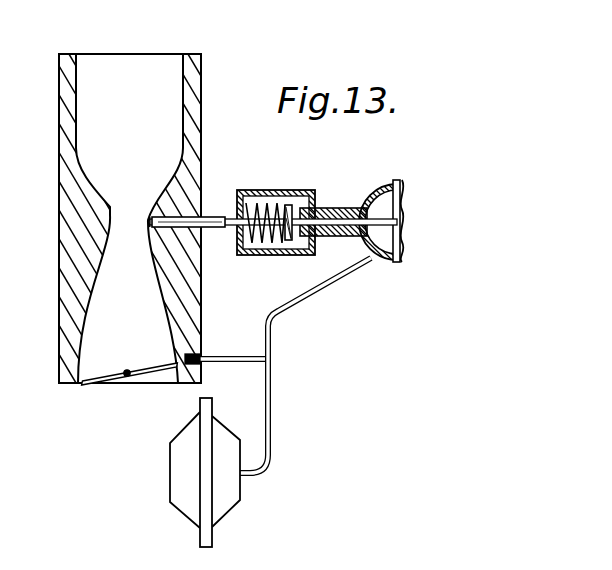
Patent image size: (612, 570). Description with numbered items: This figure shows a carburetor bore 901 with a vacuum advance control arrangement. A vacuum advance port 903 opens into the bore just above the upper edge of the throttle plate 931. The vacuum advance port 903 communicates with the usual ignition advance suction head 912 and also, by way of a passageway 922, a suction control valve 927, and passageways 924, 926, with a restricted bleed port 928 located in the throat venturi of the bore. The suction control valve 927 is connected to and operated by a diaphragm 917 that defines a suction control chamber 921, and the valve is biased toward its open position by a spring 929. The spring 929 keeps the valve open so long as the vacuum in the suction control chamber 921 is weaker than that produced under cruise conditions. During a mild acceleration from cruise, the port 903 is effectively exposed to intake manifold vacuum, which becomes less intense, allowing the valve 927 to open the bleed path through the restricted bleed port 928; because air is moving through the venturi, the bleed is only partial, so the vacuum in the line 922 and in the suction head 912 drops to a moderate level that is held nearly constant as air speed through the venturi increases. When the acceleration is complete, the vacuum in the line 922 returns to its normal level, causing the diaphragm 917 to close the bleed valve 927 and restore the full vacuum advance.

The carburetor bore 901 is at (203, 139).
The vacuum advance port 903 is at (207, 355).
The ignition advance suction head 912 is at (228, 497).
The diaphragm 917 is at (402, 200).
The suction control chamber 921 is at (388, 229).
The passageway 922 is at (300, 255).
The passageway 924 is at (283, 205).
The passageway 926 is at (213, 215).
The suction control valve 927 is at (360, 206).
The restricted bleed port 928 is at (150, 228).
The spring 929 is at (259, 255).
The throttle plate 931 is at (163, 372).